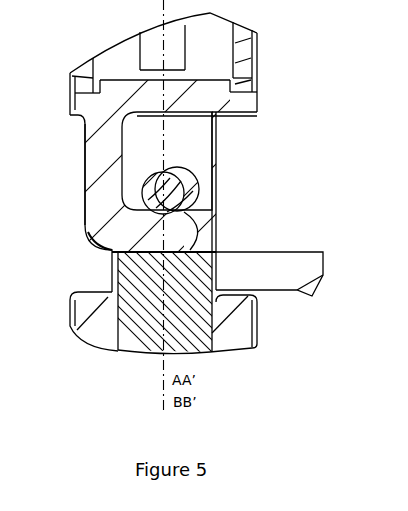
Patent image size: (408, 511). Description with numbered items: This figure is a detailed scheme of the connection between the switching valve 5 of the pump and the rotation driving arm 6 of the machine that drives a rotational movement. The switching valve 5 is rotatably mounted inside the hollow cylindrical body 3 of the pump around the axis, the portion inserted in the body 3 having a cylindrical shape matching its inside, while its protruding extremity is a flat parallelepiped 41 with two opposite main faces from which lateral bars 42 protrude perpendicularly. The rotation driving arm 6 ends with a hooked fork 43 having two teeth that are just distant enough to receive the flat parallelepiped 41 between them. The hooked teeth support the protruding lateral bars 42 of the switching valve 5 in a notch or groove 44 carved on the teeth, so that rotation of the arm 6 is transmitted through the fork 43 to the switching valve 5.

The rotation driving arm 6 is at (183, 37).
The flat parallelepiped 41 is at (198, 145).
The lateral bars 42 is at (187, 190).
The hooked fork 43 is at (102, 175).
The notch or groove 44 is at (160, 214).
The hollow cylindrical body 3 is at (97, 320).
The switching valve 5 is at (242, 350).